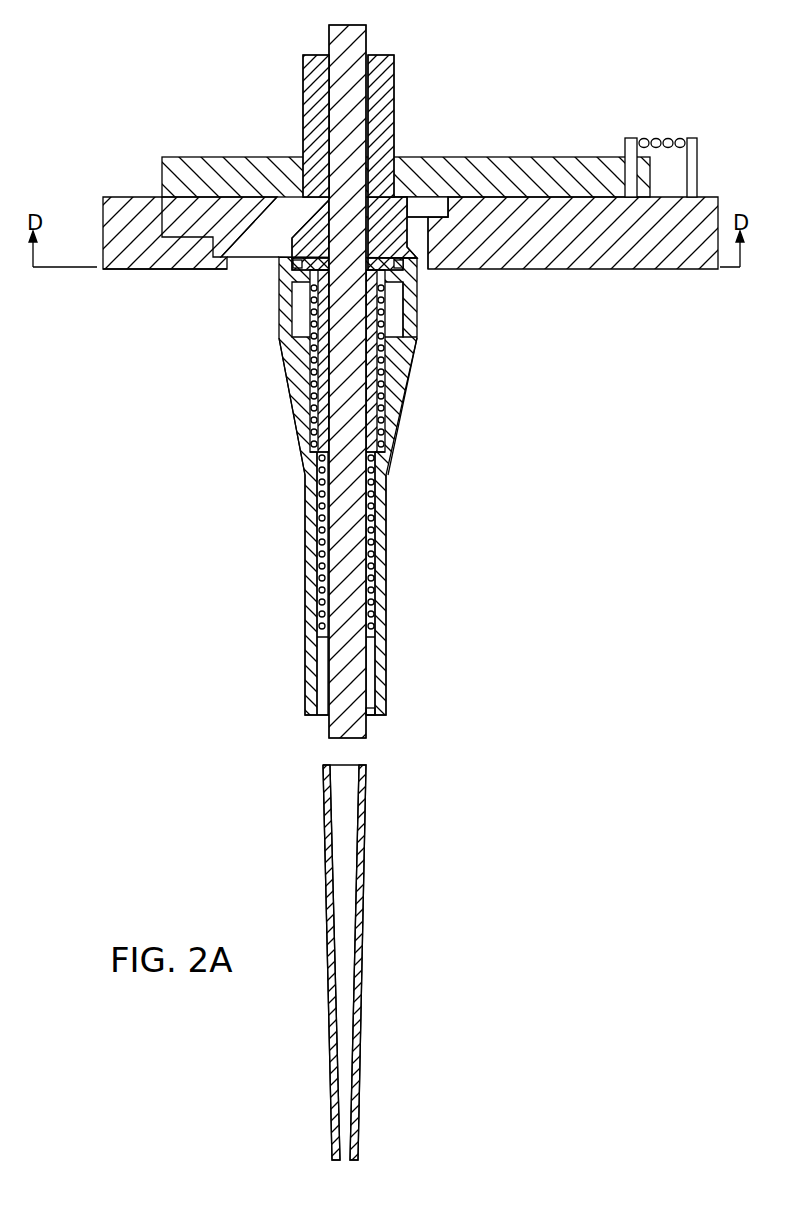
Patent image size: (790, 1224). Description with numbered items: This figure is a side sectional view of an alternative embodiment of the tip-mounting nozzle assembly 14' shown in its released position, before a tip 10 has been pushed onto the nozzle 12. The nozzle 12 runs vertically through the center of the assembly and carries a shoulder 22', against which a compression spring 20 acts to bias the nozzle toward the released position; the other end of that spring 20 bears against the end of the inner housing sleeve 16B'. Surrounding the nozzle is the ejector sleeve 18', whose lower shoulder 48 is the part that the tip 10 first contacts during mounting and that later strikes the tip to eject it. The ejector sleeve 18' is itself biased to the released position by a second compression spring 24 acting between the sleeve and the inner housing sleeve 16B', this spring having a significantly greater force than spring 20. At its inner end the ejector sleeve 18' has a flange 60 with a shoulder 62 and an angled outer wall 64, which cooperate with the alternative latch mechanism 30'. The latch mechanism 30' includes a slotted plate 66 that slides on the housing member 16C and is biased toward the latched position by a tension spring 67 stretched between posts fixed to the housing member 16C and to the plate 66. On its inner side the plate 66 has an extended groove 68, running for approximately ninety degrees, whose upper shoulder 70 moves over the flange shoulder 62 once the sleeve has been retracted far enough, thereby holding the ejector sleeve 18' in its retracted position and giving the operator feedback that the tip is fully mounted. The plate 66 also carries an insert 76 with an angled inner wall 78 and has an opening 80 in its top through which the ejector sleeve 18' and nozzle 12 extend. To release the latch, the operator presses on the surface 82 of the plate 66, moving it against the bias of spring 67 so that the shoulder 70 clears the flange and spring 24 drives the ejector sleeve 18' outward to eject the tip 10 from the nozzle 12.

The tip 10 is at (323, 826).
The nozzle 12 is at (326, 727).
The nozzle assembly 14' is at (297, 385).
The inner housing sleeve 16B' is at (335, 484).
The housing member 16C is at (533, 163).
The ejector sleeve 18' is at (318, 595).
The compression spring 20 is at (322, 558).
The shoulder 22' is at (323, 583).
The compression spring 24 is at (303, 406).
The latch mechanism 30' is at (377, 215).
The shoulder 48 is at (374, 718).
The flange 60 is at (433, 222).
The shoulder 62 is at (425, 254).
The angled outer wall 64 is at (295, 260).
The slotted plate 66 is at (153, 270).
The tension spring 67 is at (677, 140).
The groove 68 is at (412, 205).
The upper shoulder 70 is at (447, 220).
The insert 76 is at (196, 240).
The angled inner wall 78 is at (233, 244).
The opening 80 is at (262, 258).
The surface 82 is at (103, 232).